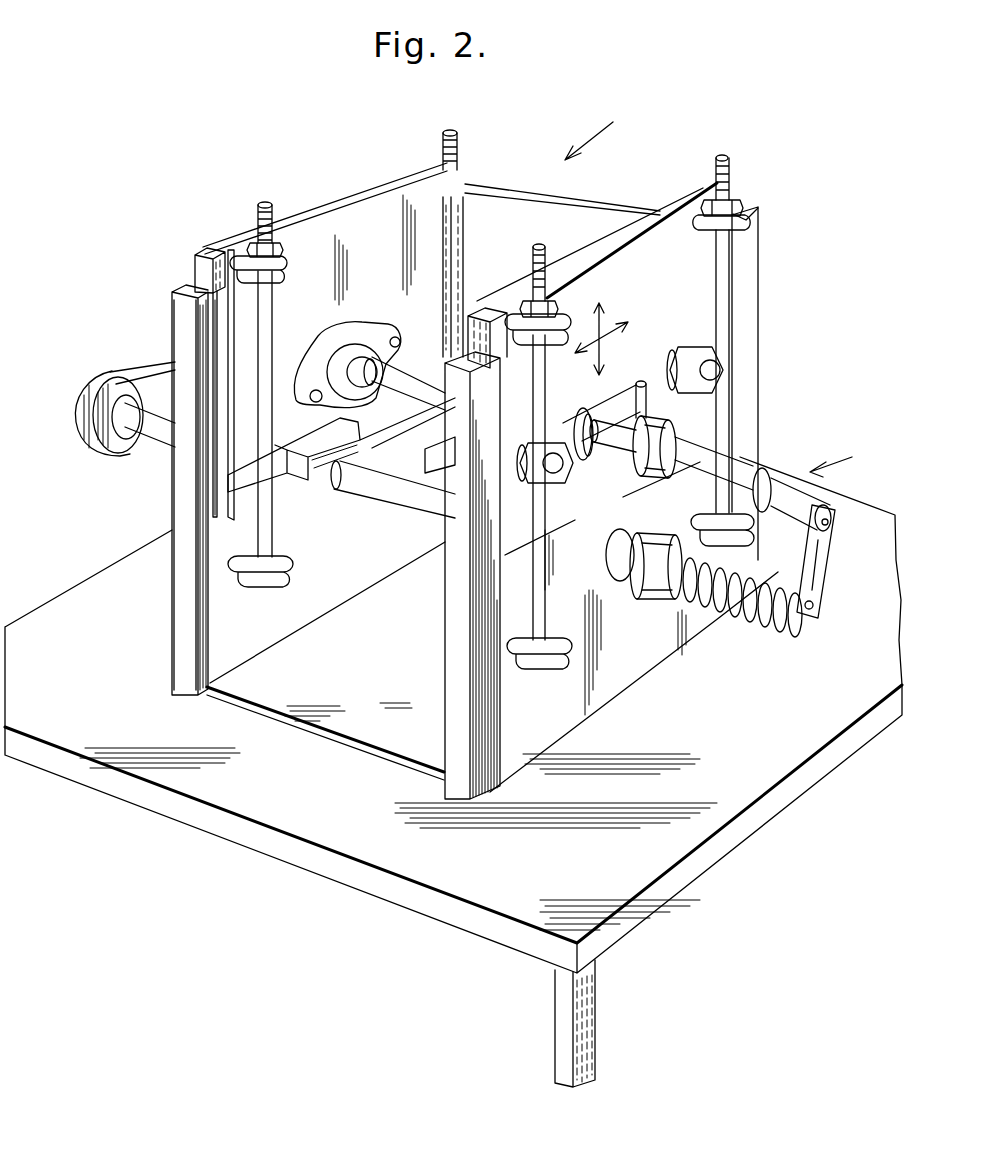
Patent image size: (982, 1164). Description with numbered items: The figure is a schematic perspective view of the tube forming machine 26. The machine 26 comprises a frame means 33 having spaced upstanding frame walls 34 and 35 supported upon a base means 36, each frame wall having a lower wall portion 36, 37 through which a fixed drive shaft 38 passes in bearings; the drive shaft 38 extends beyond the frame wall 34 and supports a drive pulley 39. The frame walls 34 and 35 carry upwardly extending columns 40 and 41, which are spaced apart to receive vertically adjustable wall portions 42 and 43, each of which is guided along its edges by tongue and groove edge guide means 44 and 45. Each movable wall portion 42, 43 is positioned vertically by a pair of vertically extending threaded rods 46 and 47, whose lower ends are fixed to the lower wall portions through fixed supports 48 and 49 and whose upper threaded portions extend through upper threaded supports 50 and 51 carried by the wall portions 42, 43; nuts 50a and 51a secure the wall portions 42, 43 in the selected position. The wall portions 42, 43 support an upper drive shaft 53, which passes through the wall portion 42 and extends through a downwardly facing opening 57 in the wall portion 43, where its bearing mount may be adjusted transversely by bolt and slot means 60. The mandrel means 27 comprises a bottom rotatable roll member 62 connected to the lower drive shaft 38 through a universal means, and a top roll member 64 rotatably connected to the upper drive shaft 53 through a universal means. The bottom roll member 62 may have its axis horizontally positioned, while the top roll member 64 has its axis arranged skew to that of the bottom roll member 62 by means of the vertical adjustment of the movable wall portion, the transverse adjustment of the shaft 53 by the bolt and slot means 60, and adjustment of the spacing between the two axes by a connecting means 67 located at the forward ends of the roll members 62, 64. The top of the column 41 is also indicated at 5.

The machine 26 is at (603, 126).
The mandrel means 27 is at (850, 457).
The top of post 5 is at (748, 219).
The frame means 33 is at (172, 648).
The frame wall 34 is at (180, 533).
The frame wall 35 is at (528, 745).
The base means / lower wall portion 36 is at (320, 835).
The lower wall portion 37 is at (642, 638).
The drive shaft 38 is at (378, 500).
The drive pulley 39 is at (112, 392).
The column 40 is at (175, 332).
The column 41 is at (750, 300).
The movable wall portion 42 is at (360, 225).
The movable wall portion 43 is at (637, 250).
The edge guide means 44 is at (215, 257).
The edge guide means 45 is at (483, 315).
The threaded rods 46 is at (267, 204).
The threaded rods 47 is at (541, 256).
The fixed support 48 is at (256, 582).
The fixed support 49 is at (531, 668).
The upper threaded support 50 is at (250, 268).
The nut 50a is at (272, 253).
The upper threaded support 51 is at (527, 337).
The nut 51a is at (560, 307).
The drive shaft 53 is at (415, 372).
The downwardly facing opening 57 is at (641, 382).
The bolt and slot means 60 is at (550, 445).
The bottom roll member 62 is at (733, 605).
The top roll member 64 is at (755, 462).
The connecting means 67 is at (828, 535).